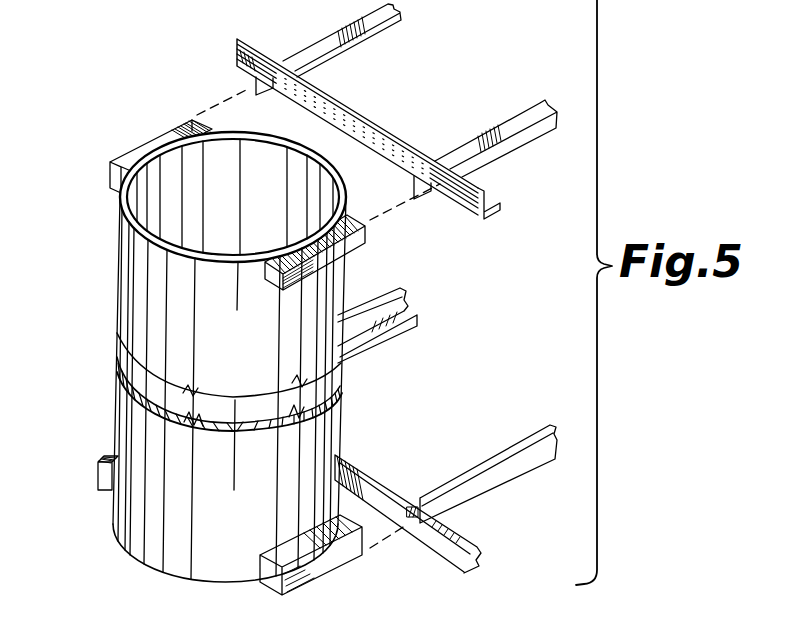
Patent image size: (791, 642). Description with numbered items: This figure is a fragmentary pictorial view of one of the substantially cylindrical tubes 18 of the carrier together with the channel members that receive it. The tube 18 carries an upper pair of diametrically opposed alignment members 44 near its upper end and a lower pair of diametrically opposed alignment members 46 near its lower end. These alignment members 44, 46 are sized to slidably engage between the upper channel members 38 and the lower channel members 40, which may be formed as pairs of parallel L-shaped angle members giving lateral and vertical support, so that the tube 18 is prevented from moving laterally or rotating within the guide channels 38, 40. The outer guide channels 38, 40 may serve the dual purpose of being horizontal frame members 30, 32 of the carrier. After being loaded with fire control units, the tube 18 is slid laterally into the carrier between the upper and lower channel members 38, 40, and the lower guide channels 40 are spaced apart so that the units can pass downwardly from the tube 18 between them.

The tube 18 is at (122, 413).
The horizontal frame member 30 is at (386, 141).
The horizontal frame member 32 is at (365, 483).
The upper channel member 38 is at (477, 137).
The lower channel member 40 is at (490, 461).
The upper alignment member 44 is at (130, 163).
The lower alignment member 46 is at (107, 478).